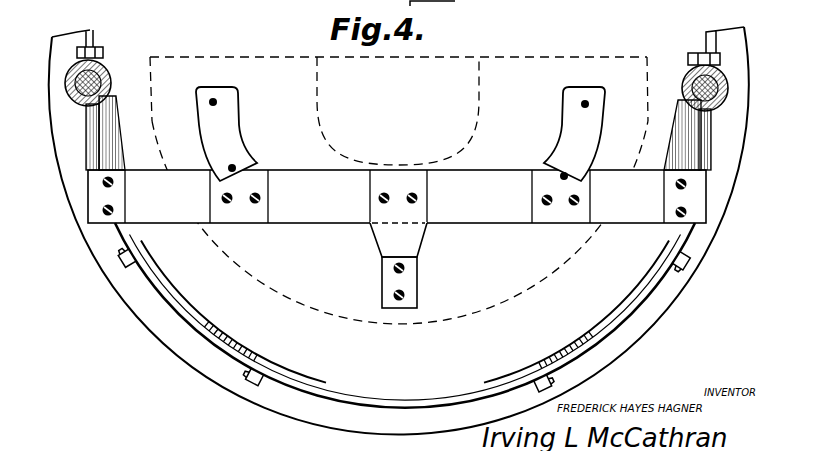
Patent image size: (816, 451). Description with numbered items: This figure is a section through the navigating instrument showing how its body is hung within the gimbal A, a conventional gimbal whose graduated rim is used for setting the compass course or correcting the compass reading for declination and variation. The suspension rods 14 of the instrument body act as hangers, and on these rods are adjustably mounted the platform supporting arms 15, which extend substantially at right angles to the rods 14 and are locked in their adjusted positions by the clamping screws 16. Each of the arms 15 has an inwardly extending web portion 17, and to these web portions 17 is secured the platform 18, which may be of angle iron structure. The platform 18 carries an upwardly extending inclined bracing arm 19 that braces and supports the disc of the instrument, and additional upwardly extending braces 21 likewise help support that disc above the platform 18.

The suspension rods 14 is at (80, 105).
The platform supporting arms 15 is at (110, 72).
The clamping screws 16 is at (102, 47).
The web portions 17 is at (107, 128).
The platform 18 is at (397, 196).
The inclined bracing arm 19 is at (398, 265).
The braces 21 is at (567, 220).
The gimbal A is at (606, 313).